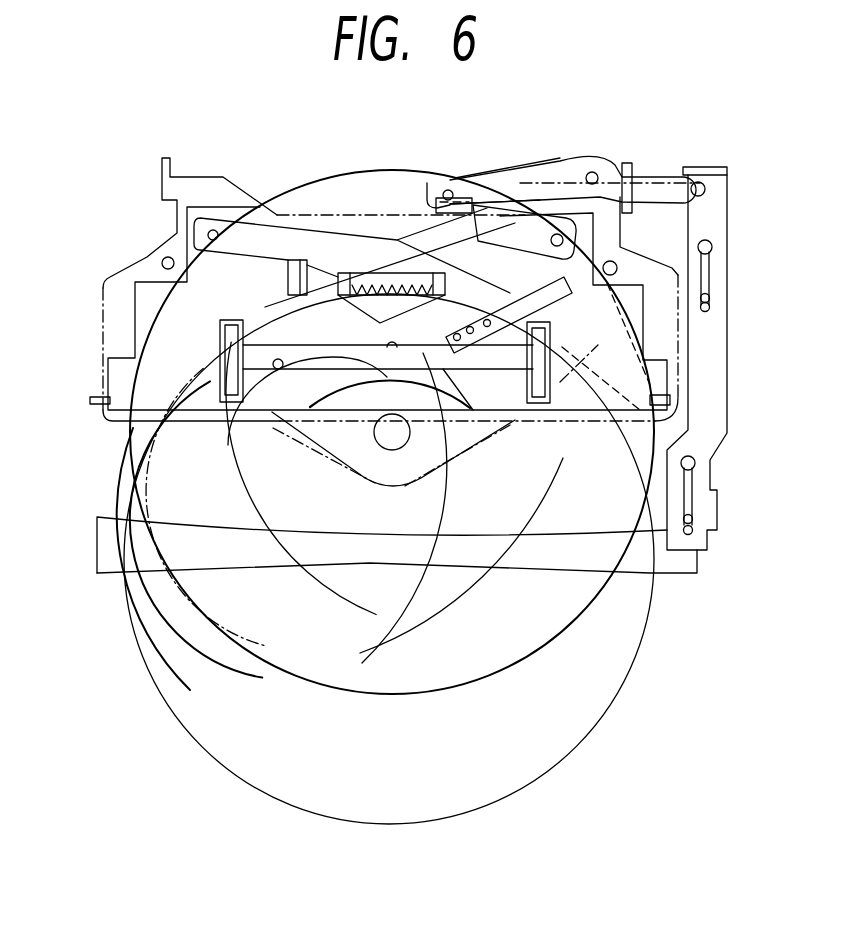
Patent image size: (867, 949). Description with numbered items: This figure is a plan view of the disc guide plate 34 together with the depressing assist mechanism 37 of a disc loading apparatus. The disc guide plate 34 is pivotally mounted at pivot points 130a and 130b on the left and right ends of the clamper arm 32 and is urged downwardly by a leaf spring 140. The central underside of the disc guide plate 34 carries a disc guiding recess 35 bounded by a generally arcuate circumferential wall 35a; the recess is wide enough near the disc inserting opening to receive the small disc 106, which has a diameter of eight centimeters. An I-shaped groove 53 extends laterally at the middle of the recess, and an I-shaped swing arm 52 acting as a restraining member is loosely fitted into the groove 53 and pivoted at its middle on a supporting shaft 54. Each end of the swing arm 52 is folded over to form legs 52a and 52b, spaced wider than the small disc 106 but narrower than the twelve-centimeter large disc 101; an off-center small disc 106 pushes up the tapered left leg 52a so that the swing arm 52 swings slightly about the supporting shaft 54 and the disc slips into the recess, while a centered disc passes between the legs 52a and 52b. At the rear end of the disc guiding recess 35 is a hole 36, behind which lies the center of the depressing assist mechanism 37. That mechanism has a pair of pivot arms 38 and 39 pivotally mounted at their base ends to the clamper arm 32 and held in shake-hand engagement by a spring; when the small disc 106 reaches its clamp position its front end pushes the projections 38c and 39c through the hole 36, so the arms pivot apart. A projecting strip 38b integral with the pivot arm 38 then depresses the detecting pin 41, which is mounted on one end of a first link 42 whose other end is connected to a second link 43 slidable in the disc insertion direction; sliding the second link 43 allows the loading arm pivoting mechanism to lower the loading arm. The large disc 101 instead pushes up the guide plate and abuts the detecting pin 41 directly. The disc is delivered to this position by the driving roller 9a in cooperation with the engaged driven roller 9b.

The clamper arm 32 is at (98, 274).
The disc guide plate 34 is at (148, 280).
The disc guiding recess 35 is at (572, 368).
The arcuate circumferential wall 35a is at (616, 334).
The hole 36 is at (333, 277).
The depressing assist mechanism 37 is at (352, 192).
The pivot arm 38 is at (505, 170).
The projecting strip 38b is at (428, 187).
The projection 38c is at (514, 293).
The pivot arm 39 is at (257, 248).
The projection 39c is at (288, 279).
The detecting pin 41 is at (466, 163).
The first link 42 is at (548, 162).
The second link 43 is at (710, 367).
The swing arm 52 is at (423, 353).
The left leg 52a is at (230, 402).
The right leg 52b is at (548, 418).
The I-shaped groove 53 is at (278, 369).
The supporting shaft 54 is at (412, 417).
The large disc 101 is at (430, 698).
The small disc 106 is at (150, 628).
The pivot point 130a is at (100, 410).
The pivot point 130b is at (670, 401).
The leaf spring 140 is at (455, 395).
The driving roller 9a is at (683, 577).
The driven roller 9b is at (397, 561).